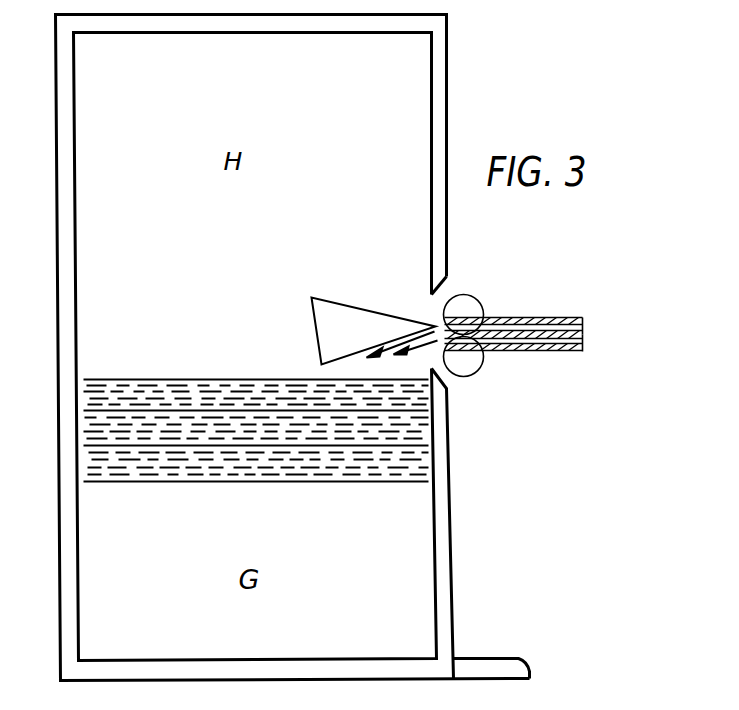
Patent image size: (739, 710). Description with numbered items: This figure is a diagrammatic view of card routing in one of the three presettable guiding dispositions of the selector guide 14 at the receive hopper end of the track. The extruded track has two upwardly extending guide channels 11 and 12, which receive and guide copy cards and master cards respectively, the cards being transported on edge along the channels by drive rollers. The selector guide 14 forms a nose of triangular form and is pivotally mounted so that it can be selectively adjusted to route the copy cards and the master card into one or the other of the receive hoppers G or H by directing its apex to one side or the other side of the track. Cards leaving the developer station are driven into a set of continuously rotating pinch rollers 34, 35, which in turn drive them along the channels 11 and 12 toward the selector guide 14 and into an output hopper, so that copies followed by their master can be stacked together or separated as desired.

The guide channel 11 is at (518, 316).
The guide channel 12 is at (530, 340).
The selector guide 14 is at (332, 322).
The pinch roller 34 is at (463, 296).
The pinch roller 35 is at (467, 367).